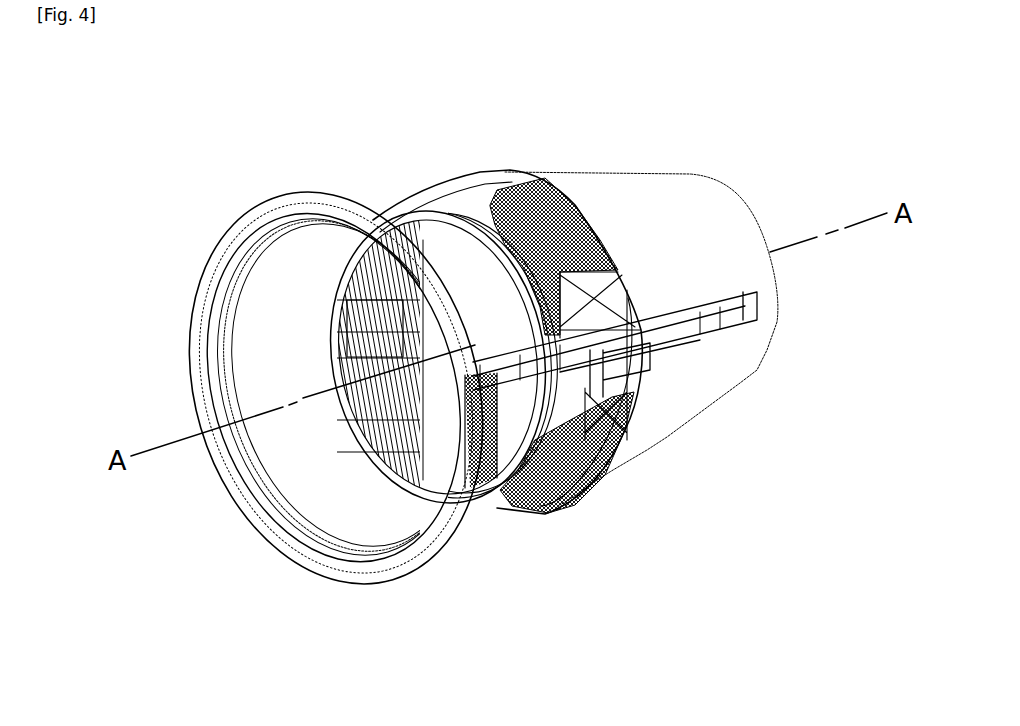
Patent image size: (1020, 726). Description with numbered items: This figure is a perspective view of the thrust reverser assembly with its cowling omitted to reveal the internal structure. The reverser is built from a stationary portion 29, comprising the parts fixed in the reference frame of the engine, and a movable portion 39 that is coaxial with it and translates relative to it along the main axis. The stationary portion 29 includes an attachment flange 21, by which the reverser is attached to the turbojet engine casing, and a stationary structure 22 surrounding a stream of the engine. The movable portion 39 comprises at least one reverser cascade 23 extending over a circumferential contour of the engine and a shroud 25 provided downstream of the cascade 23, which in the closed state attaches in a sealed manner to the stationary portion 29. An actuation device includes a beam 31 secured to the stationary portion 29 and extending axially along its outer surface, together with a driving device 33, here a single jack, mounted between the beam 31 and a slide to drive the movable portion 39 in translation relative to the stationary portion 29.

The attachment flange 21 is at (299, 218).
The stationary structure 22 is at (427, 227).
The reverser cascade 23 is at (480, 170).
The shroud 25 is at (706, 205).
The stationary portion 29 is at (237, 186).
The beam 31 is at (573, 205).
The driving device 33 is at (640, 425).
The movable portion 39 is at (656, 140).